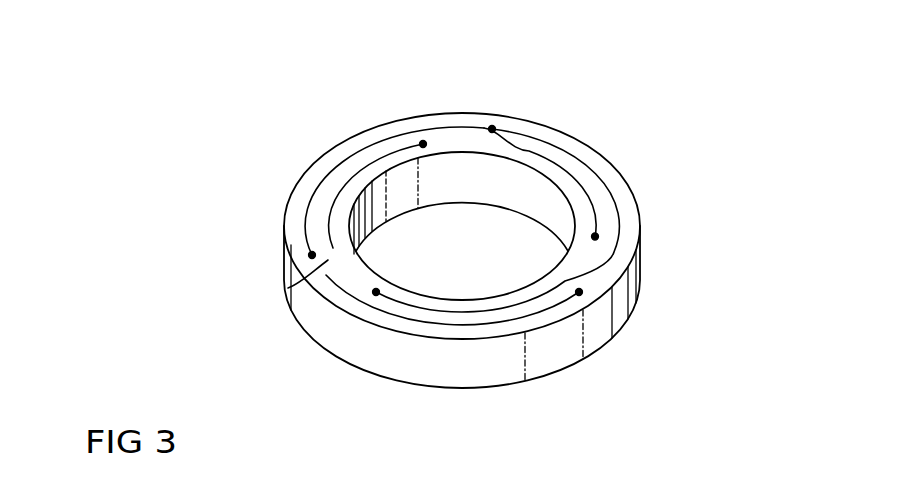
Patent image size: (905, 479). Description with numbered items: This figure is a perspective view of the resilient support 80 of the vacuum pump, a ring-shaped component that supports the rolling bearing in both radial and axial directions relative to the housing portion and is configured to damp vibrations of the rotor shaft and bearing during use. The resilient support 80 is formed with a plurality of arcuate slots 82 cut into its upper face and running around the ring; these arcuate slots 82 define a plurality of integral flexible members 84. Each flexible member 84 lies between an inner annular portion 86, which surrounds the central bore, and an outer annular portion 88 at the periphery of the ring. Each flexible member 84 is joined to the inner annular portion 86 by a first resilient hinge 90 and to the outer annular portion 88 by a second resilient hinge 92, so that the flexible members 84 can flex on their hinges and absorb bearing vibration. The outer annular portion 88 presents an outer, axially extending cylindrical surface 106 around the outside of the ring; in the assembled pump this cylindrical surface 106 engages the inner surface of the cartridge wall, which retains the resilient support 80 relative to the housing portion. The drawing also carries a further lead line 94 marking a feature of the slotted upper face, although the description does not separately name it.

The resilient support 80 is at (634, 174).
The arcuate slots 82 is at (563, 139).
The flexible members 84 is at (322, 224).
The inner annular portion 86 is at (353, 186).
The outer annular portion 88 is at (453, 114).
The first resilient hinge 90 is at (432, 133).
The second resilient hinge 92 is at (295, 284).
The channel end 94 is at (468, 170).
The outer axially extending cylindrical surface 106 is at (328, 350).